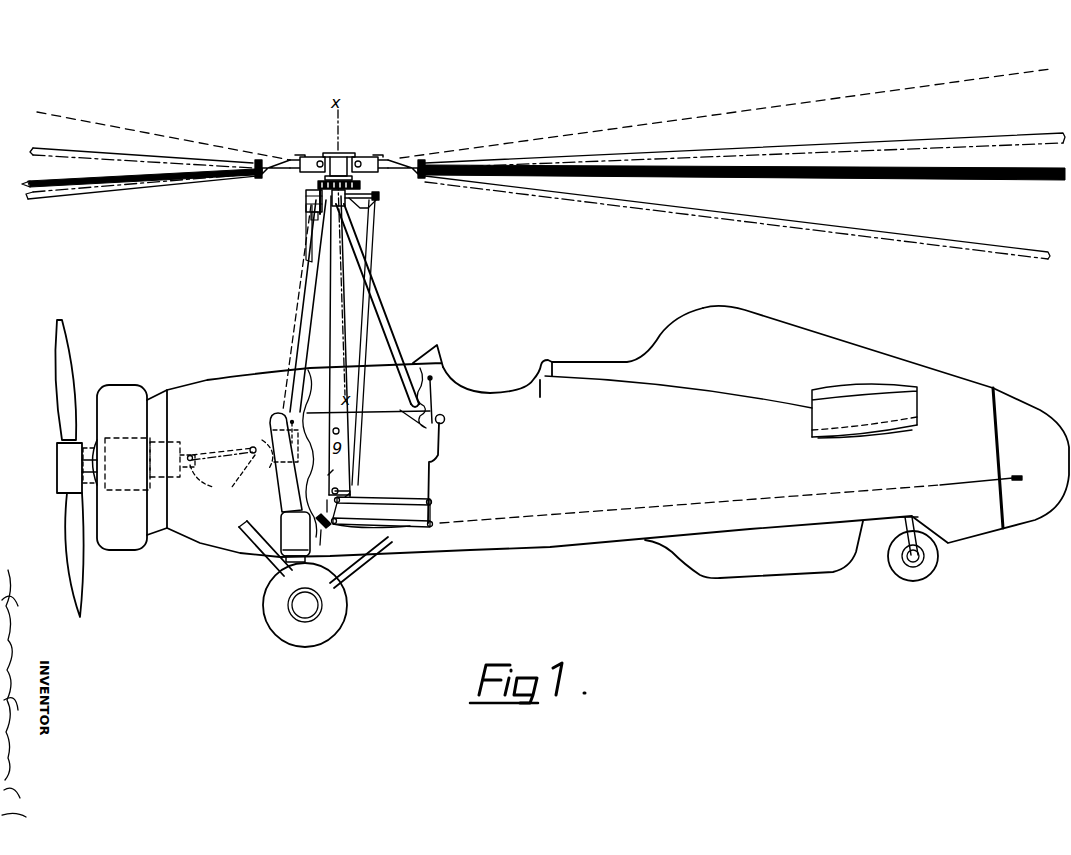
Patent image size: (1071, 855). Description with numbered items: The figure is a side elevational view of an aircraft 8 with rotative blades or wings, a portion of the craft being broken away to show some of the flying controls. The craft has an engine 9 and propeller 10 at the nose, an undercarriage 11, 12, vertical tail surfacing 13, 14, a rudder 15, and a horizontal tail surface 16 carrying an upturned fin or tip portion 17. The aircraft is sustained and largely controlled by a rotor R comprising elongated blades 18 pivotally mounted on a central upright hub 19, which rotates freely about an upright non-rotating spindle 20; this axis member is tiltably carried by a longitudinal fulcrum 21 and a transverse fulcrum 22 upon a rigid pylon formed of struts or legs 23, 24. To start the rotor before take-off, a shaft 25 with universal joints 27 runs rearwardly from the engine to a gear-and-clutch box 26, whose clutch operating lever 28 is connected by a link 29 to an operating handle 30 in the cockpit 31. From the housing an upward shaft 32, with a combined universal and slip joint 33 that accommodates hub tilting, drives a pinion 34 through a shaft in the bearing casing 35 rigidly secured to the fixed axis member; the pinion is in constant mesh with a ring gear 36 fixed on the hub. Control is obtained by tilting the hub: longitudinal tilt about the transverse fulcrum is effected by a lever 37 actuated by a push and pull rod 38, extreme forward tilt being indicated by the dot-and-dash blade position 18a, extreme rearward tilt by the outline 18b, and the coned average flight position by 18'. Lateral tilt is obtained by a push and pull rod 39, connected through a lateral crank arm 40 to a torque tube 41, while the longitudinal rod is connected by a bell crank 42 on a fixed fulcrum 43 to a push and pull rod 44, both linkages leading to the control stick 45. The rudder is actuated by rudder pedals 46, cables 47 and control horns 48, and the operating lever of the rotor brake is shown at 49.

The aircraft 8 is at (539, 432).
The engine 9 is at (125, 385).
The propeller 10 is at (62, 346).
The undercarriage 11 is at (253, 562).
The undercarriage 12 is at (919, 580).
The vertical tail surfacing 13 is at (848, 347).
The vertical tail surfacing 14 is at (754, 549).
The rudder 15 is at (991, 465).
The horizontal tail surface 16 is at (838, 438).
The upturned fin or tip portion 17 is at (915, 401).
The blades or wings 18 is at (533, 186).
The blades in extreme forward tilt position 18a is at (75, 200).
The blades in extreme rearward tilt position 18b is at (80, 146).
The blades in coned flight position 18' is at (543, 103).
The hub or axis member 19 is at (343, 150).
The rotor R is at (362, 158).
The spindle or shaft 20 is at (312, 206).
The longitudinal fulcrum 21 is at (362, 212).
The transverse fulcrum 22 is at (328, 218).
The strut or leg 23 is at (316, 281).
The strut or leg 24 is at (372, 293).
The shaft 25 is at (214, 442).
The gear-and-clutch box 26 is at (262, 440).
The universal joints 27 is at (209, 481).
The clutch operating lever 28 is at (292, 442).
The link 29 is at (368, 414).
The operating handle 30 is at (433, 400).
The cockpit 31 is at (481, 376).
The shaft 32 is at (306, 257).
The combined universal and slip joint 33 is at (318, 215).
The pinion 34 is at (312, 185).
The bearing casing 35 is at (308, 196).
The ring gear 36 is at (372, 184).
The lever 37 is at (388, 205).
The push and pull rod 38 is at (364, 318).
The push and pull rod 39 is at (326, 302).
The lateral crank arm 40 is at (318, 498).
The torque tube 41 is at (397, 500).
The bell crank 42 is at (355, 480).
The fixed fulcrum 43 is at (337, 492).
The push and pull rod 44 is at (415, 525).
The control stick 45 is at (440, 456).
The rudder pedals 46 is at (323, 527).
The cables 47 is at (642, 510).
The control horns 48 is at (1016, 482).
The rotor brake operating lever 49 is at (370, 194).